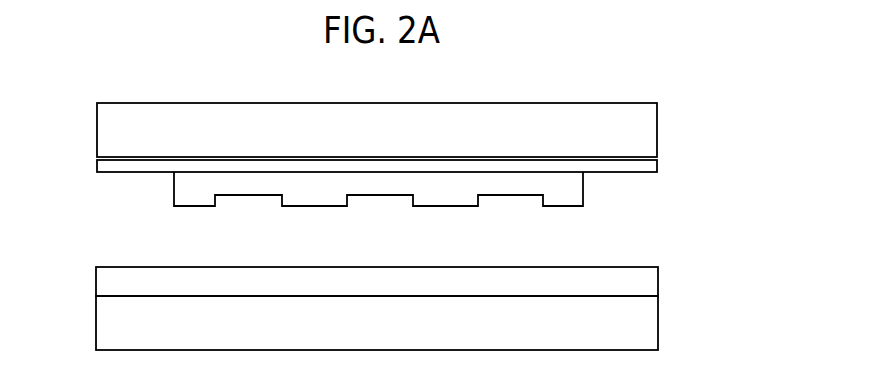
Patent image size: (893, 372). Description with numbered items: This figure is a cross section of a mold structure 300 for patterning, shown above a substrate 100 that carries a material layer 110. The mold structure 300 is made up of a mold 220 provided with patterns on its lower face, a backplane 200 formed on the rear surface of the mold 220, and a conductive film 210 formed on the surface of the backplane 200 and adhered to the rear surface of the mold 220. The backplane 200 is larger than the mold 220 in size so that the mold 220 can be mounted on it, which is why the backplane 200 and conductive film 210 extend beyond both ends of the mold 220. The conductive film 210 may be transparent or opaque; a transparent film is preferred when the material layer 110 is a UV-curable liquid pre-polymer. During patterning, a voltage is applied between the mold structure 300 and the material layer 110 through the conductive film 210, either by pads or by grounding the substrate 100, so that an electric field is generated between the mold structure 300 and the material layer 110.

The substrate 100 is at (653, 320).
The material layer 110 is at (653, 282).
The backplane 200 is at (653, 133).
The conductive film 210 is at (653, 163).
The mold 220 is at (577, 190).
The mold structure 300 is at (446, 154).